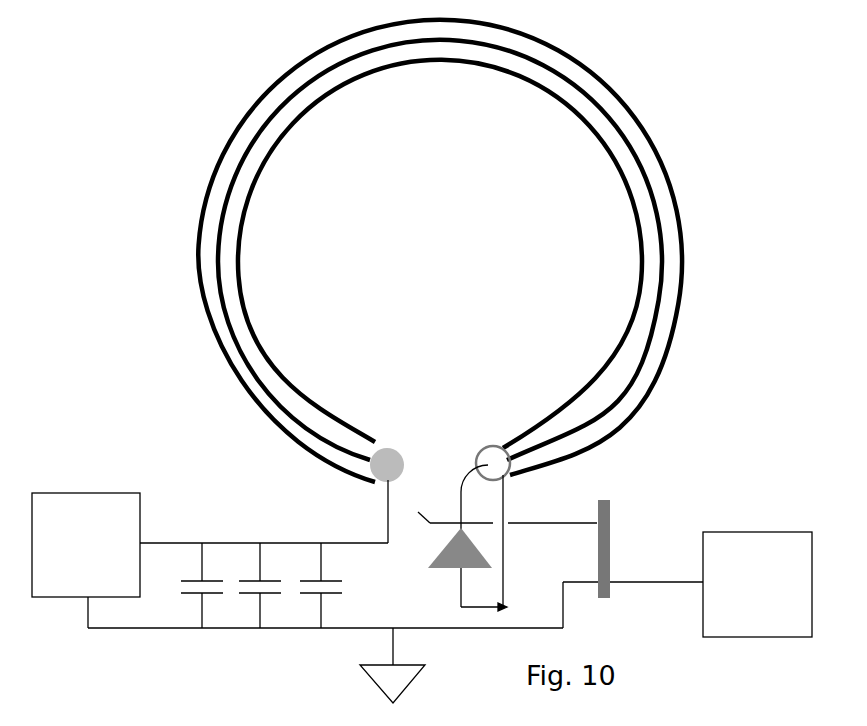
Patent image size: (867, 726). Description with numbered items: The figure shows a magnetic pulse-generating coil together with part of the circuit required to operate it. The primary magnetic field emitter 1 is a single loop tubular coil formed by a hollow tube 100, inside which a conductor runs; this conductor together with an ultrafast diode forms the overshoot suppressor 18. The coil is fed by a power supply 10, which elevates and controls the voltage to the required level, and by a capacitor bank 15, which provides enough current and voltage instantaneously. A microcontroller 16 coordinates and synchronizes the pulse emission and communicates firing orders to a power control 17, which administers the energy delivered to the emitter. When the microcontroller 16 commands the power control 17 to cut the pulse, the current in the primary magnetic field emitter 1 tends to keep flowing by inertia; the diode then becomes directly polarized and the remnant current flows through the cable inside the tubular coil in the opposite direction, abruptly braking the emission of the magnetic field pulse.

The primary magnetic field emitter 1 is at (692, 179).
The hollow tube 100 is at (489, 448).
The overshoot suppressor 18 is at (272, 132).
The power supply 10 is at (86, 545).
The capacitor bank 15 is at (261, 567).
The power control 17 is at (584, 549).
The microcontroller 16 is at (757, 584).